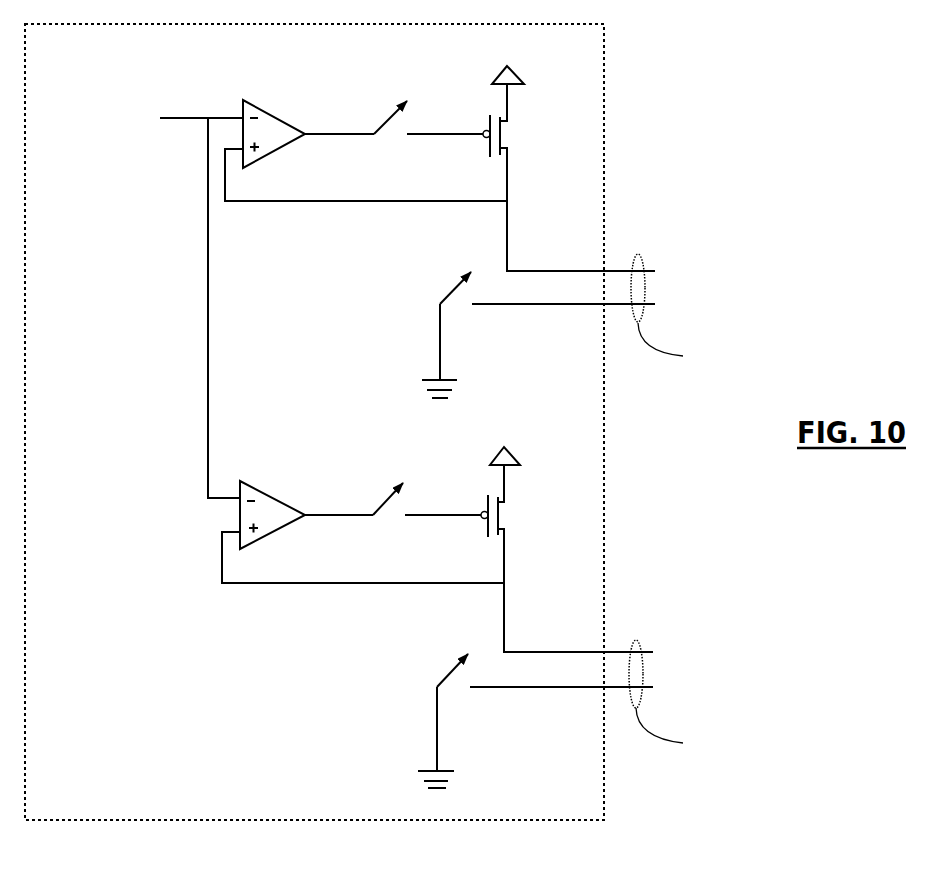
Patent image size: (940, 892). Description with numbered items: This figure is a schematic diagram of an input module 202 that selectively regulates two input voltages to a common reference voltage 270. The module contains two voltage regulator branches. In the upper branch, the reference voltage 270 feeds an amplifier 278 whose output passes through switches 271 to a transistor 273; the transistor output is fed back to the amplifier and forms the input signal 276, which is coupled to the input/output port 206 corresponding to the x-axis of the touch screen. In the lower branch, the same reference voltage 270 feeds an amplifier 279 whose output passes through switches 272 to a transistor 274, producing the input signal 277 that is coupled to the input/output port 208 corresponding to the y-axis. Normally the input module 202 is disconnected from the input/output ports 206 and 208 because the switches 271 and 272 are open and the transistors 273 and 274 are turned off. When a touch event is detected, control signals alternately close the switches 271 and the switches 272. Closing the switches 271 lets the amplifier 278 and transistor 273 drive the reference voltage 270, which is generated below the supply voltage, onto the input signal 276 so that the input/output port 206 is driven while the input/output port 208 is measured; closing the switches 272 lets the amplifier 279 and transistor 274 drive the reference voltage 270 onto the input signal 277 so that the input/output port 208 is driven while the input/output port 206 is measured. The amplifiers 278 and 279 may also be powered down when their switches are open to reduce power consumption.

The input module 202 is at (223, 780).
The reference voltage 270 is at (140, 295).
The switches 271 is at (373, 103).
The switches 272 is at (370, 482).
The transistor 273 is at (527, 135).
The transistor 274 is at (523, 515).
The input signal 276 is at (708, 288).
The input signal 277 is at (706, 671).
The amplifier 278 is at (277, 118).
The amplifier 279 is at (277, 498).
The input/output port 206 is at (716, 352).
The input/output port 208 is at (714, 737).